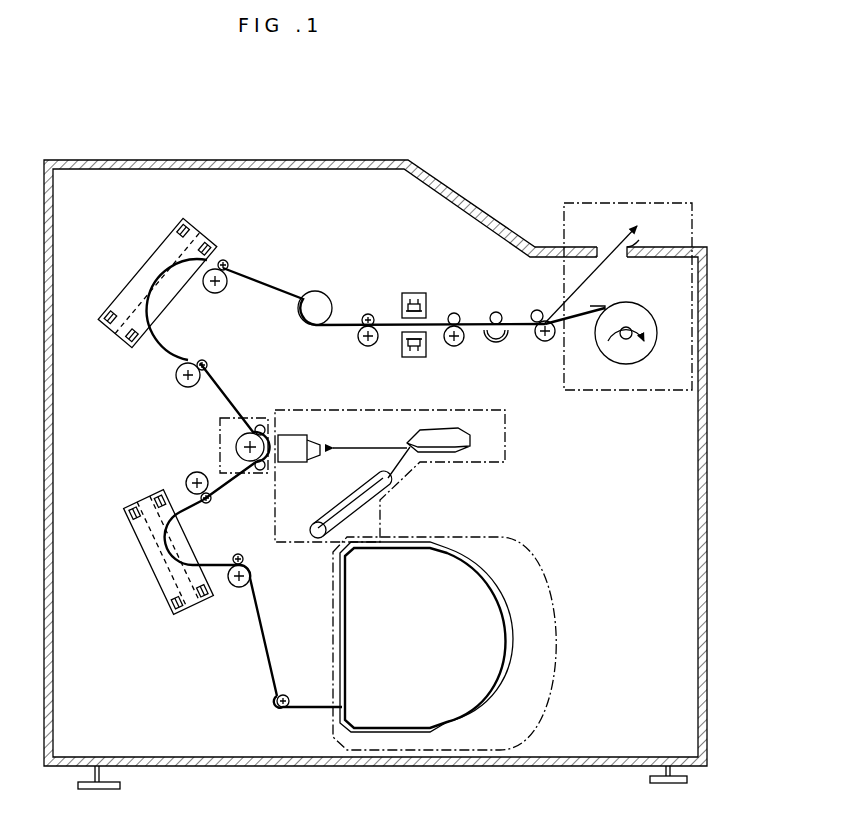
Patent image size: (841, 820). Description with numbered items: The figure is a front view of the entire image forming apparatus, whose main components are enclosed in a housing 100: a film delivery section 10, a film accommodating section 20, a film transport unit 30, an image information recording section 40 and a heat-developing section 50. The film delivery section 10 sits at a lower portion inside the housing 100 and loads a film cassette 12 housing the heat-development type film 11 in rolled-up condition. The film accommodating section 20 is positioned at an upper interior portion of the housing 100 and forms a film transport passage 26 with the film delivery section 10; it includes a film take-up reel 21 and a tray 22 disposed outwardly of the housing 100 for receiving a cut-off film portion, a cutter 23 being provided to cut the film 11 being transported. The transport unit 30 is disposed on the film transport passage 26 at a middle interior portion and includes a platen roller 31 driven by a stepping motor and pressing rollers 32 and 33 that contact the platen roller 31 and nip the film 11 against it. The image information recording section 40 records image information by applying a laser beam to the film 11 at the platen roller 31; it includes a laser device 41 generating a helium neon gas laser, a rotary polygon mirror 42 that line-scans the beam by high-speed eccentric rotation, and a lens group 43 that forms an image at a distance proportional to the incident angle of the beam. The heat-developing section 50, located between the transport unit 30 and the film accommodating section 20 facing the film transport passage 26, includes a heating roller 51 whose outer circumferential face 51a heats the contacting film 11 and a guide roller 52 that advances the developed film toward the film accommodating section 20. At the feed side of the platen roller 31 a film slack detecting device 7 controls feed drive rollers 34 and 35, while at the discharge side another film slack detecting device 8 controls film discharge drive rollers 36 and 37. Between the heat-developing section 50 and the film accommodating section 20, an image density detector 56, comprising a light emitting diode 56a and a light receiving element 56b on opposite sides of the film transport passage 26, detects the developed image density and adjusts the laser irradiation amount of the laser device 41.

The housing 100 is at (457, 172).
The film accommodating section 20 is at (613, 394).
The film take-up reel 21 is at (645, 358).
The tray 22 is at (660, 245).
The film slack detecting device 8 is at (139, 264).
The film discharge drive roller 37 is at (210, 292).
The film discharge drive roller 36 is at (178, 373).
The film transport passage 26 is at (224, 381).
The film transport unit 30 is at (219, 450).
The platen roller 31 is at (240, 435).
The pressing roller 33 is at (259, 425).
The pressing roller 32 is at (263, 471).
The feed drive roller 35 is at (194, 475).
The film slack detecting device 7 is at (153, 572).
The feed drive roller 34 is at (238, 589).
The film 11 is at (290, 708).
The heat-developing section 50 is at (312, 289).
The heating roller 51 is at (326, 300).
The outer circumferential face 51a is at (300, 303).
The guide roller 52 is at (368, 311).
The image density detector 56 is at (435, 303).
The light emitting diode 56a is at (405, 357).
The light receiving element 56b is at (428, 312).
The cutter 23 is at (496, 350).
The image information recording section 40 is at (423, 476).
The laser device 41 is at (372, 486).
The rotary polygon mirror 42 is at (466, 452).
The lens group 43 is at (297, 463).
The film delivery section 10 is at (472, 642).
The film cassette 12 is at (514, 628).